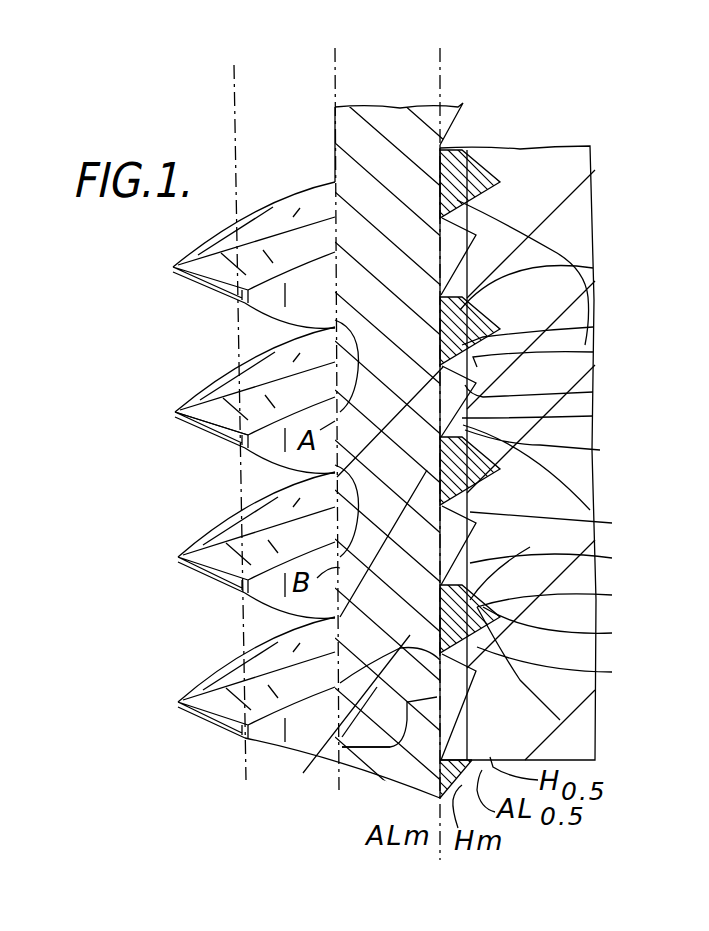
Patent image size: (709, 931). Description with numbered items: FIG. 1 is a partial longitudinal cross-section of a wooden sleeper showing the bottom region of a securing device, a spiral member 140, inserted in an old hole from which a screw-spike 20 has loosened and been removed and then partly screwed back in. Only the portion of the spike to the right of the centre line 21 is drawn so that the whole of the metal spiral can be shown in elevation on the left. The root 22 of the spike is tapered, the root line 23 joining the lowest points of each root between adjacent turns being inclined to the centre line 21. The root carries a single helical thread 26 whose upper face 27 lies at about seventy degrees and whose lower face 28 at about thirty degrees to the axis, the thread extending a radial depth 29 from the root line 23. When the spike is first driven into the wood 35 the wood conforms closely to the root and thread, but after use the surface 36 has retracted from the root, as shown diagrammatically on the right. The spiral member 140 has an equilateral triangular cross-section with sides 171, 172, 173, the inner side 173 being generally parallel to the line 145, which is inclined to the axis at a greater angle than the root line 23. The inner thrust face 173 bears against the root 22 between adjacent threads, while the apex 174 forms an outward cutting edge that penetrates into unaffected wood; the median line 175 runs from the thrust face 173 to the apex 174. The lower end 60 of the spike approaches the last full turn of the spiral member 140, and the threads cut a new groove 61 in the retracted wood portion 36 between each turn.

The screw-spike 20 is at (470, 276).
The centre line 21 is at (338, 82).
The root 22 is at (471, 373).
The root line 23 is at (445, 80).
The helical thread 26 is at (585, 423).
The upper face 27 is at (580, 353).
The lower face 28 is at (585, 460).
The radial depth of thread 29 is at (575, 392).
The wood 35 is at (531, 158).
The retracted wood surface 36 is at (561, 523).
The lower end of screw-spike 60 is at (392, 752).
The new groove 61 is at (593, 268).
The spiral member 140 is at (226, 450).
The inclined line 145 is at (233, 118).
The side of triangle 171 is at (571, 558).
The side of triangle 172 is at (574, 663).
The inner thrust face 173 is at (316, 746).
The apex 174 is at (577, 628).
The median line 175 is at (571, 579).